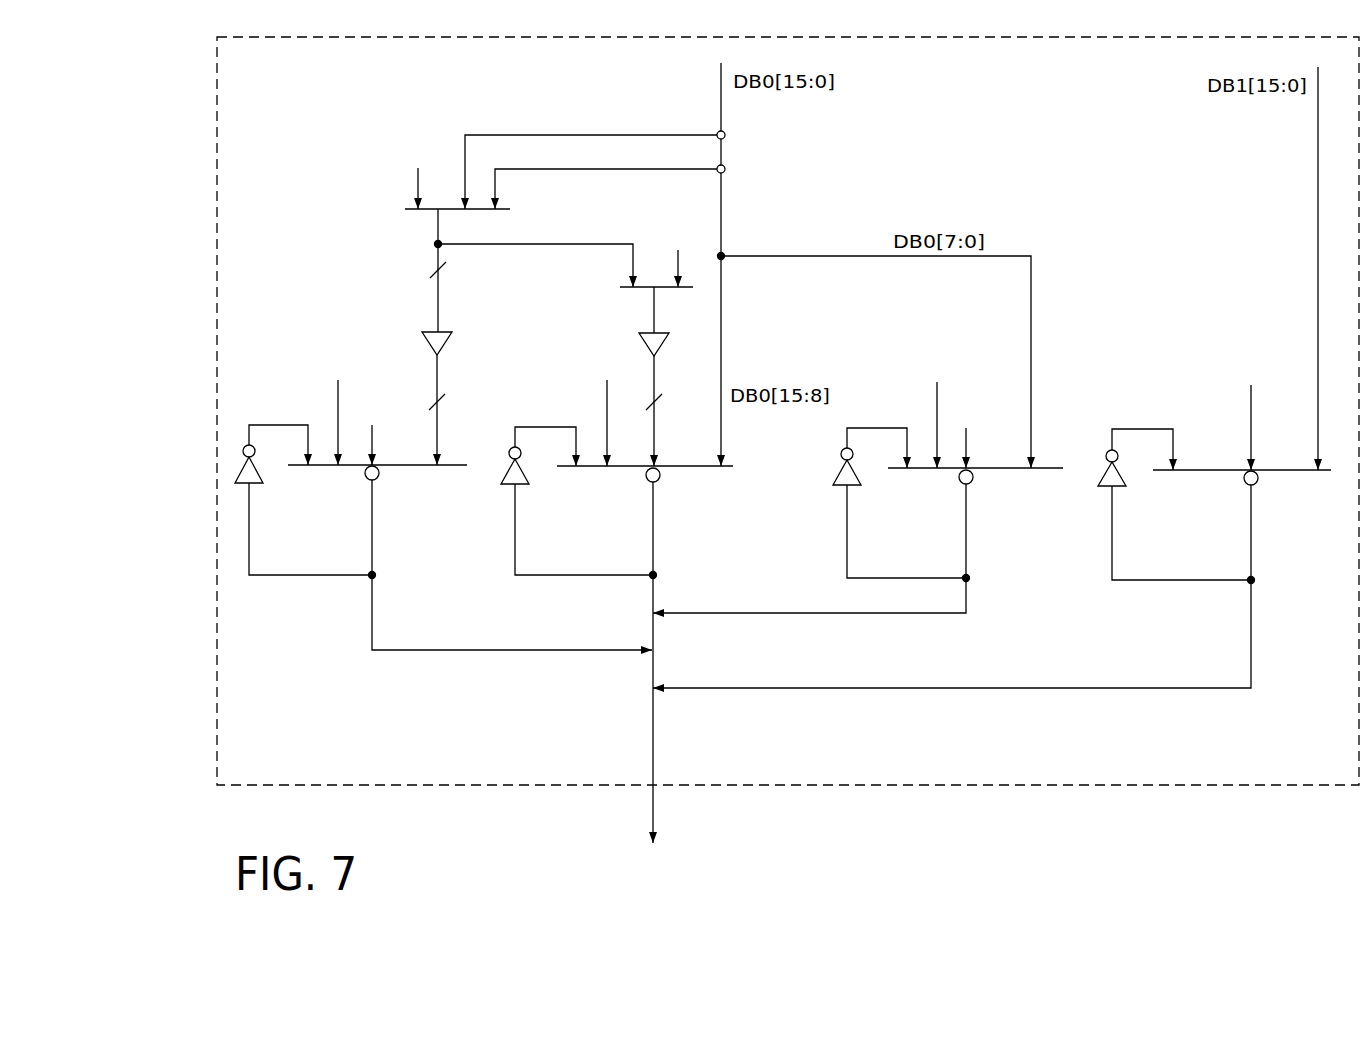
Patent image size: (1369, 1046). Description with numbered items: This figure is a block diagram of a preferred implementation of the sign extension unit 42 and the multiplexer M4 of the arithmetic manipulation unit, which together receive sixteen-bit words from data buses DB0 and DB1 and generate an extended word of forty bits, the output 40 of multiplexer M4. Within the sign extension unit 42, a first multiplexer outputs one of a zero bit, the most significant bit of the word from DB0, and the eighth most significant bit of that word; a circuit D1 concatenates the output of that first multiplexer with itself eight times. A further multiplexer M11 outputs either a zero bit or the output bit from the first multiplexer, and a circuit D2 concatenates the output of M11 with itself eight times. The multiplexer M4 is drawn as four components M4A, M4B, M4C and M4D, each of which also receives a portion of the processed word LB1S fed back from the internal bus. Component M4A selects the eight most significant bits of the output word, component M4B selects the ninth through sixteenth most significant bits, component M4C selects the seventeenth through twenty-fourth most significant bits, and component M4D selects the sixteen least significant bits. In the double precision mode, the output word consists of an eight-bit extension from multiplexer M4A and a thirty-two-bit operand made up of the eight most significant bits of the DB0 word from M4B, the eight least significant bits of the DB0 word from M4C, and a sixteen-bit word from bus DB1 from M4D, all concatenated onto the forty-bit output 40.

The sign extension unit 42 is at (193, 97).
The multiplexer M4 is at (193, 345).
The multiplexer component M4A is at (318, 467).
The multiplexer component M4B is at (587, 468).
The multiplexer component M4C is at (917, 470).
The multiplexer component M4D is at (1183, 472).
The multiplexer M11 is at (622, 287).
The concatenating circuit D1 is at (430, 332).
The concatenating circuit D2 is at (645, 333).
The 40-bit output word 40 is at (658, 722).